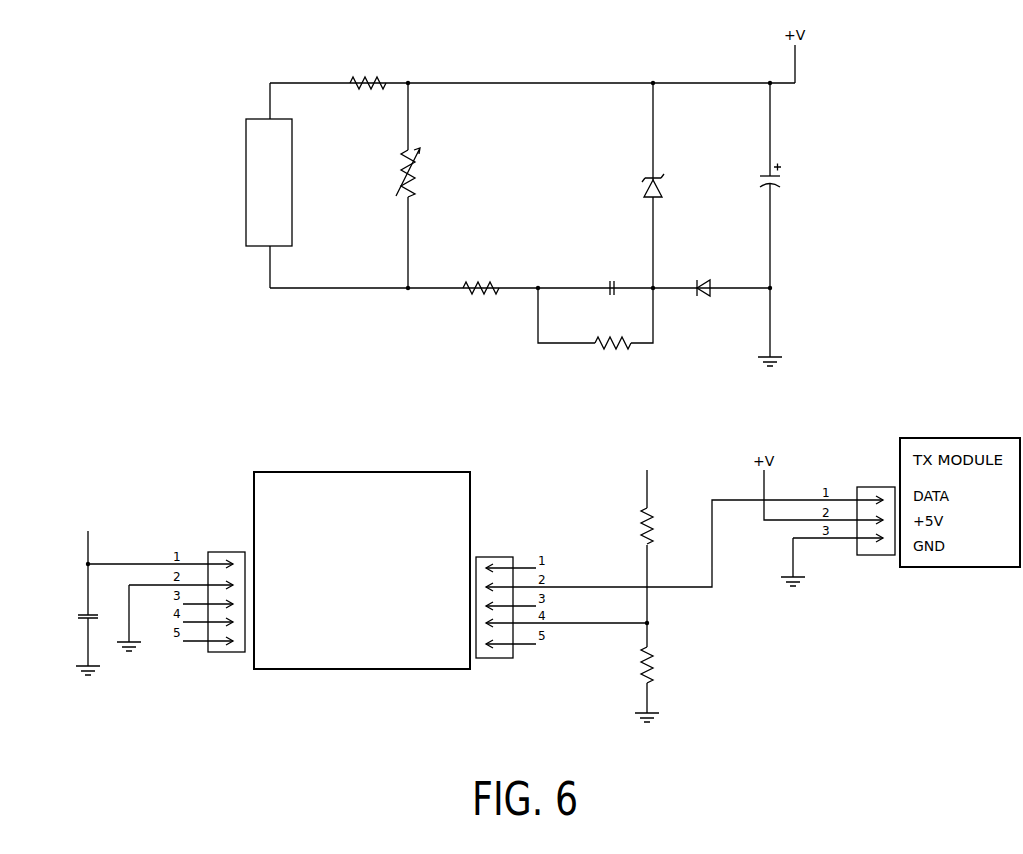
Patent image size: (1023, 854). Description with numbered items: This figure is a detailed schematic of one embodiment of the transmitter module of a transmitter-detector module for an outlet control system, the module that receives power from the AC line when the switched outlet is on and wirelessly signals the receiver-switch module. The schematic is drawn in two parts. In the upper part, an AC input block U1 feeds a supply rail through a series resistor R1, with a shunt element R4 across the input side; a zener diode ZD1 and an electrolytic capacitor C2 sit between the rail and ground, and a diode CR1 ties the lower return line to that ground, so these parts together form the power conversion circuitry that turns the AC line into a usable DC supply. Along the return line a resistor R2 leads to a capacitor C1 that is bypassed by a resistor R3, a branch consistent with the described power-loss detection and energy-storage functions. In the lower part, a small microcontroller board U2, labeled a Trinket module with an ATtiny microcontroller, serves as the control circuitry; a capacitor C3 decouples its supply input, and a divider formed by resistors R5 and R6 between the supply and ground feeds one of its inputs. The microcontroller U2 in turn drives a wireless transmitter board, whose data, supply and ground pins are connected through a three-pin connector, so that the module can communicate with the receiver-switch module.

The AC input module U1 is at (255, 182).
The resistor R1 is at (355, 78).
The resistor R2 is at (468, 282).
The resistor R3 is at (595, 318).
The varistor R4 is at (405, 185).
The resistor R5 is at (643, 538).
The resistor R6 is at (644, 671).
The capacitor C1 is at (610, 277).
The electrolytic capacitor C2 is at (780, 224).
The capacitor C3 is at (81, 594).
The zener diode ZD1 is at (669, 185).
The diode CR1 is at (719, 295).
The Trinket module (ATtiny microcontroller) U2 is at (362, 560).